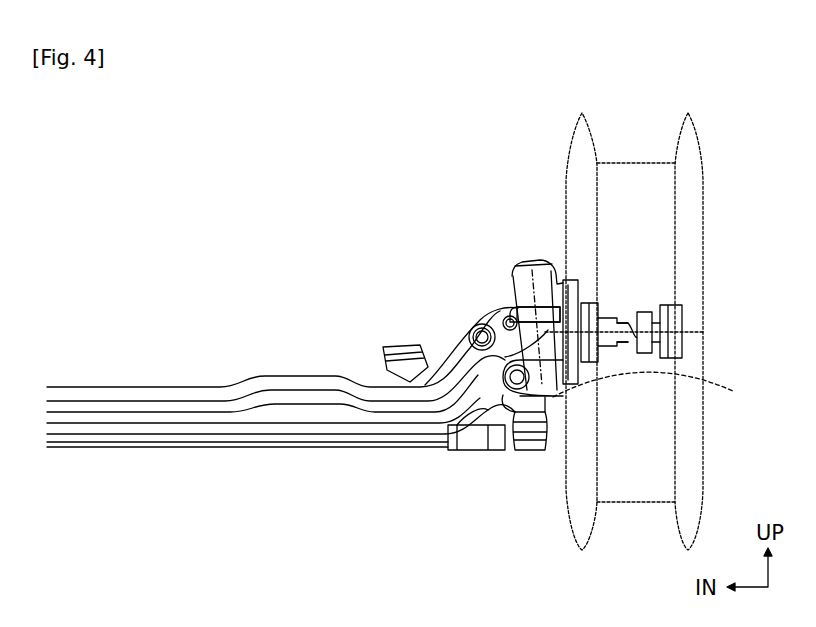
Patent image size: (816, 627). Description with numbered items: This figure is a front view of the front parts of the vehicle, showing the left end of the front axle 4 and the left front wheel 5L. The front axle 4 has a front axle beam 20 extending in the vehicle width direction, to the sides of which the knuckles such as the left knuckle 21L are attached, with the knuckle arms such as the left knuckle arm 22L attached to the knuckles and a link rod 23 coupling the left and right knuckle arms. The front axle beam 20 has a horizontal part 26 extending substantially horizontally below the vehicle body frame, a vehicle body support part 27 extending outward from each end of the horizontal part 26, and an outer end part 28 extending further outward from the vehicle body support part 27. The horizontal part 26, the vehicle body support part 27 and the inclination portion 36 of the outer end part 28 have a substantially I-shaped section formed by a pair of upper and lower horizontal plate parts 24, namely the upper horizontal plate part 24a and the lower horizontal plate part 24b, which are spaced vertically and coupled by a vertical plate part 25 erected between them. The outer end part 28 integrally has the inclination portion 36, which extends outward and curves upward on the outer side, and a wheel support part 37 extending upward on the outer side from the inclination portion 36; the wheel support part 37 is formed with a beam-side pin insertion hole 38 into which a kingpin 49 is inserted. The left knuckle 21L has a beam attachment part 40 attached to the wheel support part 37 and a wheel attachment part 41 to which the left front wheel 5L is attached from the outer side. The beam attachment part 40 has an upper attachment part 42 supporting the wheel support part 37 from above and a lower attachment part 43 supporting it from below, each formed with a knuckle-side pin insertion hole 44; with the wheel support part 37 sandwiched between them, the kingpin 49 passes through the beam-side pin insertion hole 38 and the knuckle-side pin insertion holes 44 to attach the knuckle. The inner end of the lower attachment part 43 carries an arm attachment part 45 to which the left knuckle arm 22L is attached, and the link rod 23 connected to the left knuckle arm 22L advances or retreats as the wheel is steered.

The front axle 4 is at (272, 410).
The front axle beam 20 is at (138, 387).
The horizontal plate parts 24 is at (262, 415).
The upper horizontal plate part 24a is at (170, 387).
The lower horizontal plate part 24b is at (175, 447).
The vertical plate part 25 is at (108, 413).
The horizontal part 26 is at (72, 387).
The vehicle body support part 27 is at (297, 375).
The outer end part 28 is at (469, 328).
The inclination portion 36 is at (445, 330).
The wheel support part 37 is at (682, 333).
The beam-side pin insertion hole 38 is at (563, 288).
The beam attachment part 40 is at (555, 270).
The wheel attachment part 41 is at (617, 318).
The upper attachment part 42 is at (500, 298).
The lower attachment part 43 is at (557, 390).
The knuckle-side pin insertion hole 44 is at (512, 270).
The arm attachment part 45 is at (478, 402).
The kingpin 49 is at (528, 262).
The left front wheel 5L is at (703, 232).
The left knuckle 21L is at (604, 290).
The left knuckle arm 22L is at (398, 345).
The link rod 23 is at (443, 445).